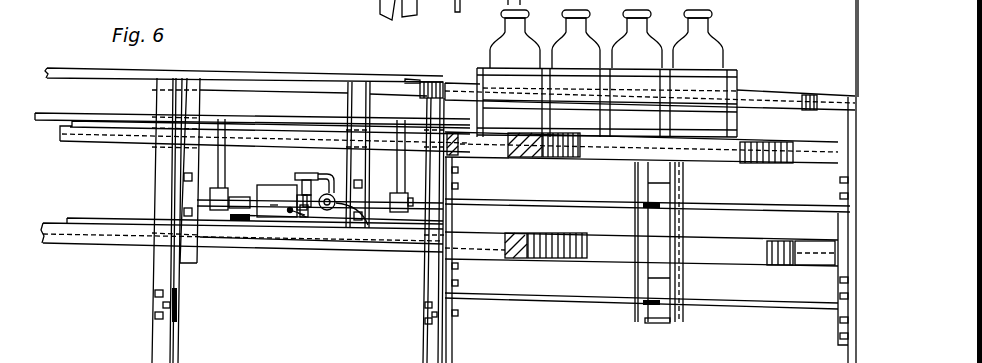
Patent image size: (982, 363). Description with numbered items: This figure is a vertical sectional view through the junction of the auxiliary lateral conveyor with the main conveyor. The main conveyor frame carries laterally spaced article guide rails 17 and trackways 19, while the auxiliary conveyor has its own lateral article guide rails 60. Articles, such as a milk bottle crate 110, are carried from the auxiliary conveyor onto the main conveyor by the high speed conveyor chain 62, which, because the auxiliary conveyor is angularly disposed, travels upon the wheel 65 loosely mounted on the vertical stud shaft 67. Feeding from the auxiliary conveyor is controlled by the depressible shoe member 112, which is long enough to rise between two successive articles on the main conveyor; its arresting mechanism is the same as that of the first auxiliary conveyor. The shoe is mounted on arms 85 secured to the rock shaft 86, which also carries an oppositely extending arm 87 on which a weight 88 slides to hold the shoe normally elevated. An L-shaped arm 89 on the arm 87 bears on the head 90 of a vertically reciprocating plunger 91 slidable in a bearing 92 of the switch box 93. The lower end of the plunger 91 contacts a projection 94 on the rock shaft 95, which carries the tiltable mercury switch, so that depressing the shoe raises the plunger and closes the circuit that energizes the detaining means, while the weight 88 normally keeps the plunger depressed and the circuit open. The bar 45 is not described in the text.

The article guide rails 17 is at (233, 84).
The shoe member 112 is at (285, 118).
The lateral article guide rails 60 is at (413, 81).
The guide bar 45 is at (143, 100).
The trackways 19 is at (117, 132).
The arms 85 is at (222, 159).
The rock shaft 86 is at (237, 195).
The L-shaped arm 89 is at (325, 181).
The head 90 is at (298, 182).
The plunger 91 is at (303, 209).
The bearing 92 is at (310, 218).
The switch box 93 is at (273, 205).
The projection 94 is at (300, 216).
The rock shaft 95 is at (290, 217).
The arm 87 is at (330, 211).
The weight 88 is at (368, 225).
The conveyor chain 62 is at (498, 153).
The wheel 65 is at (597, 155).
The milk bottle crate 110 is at (753, 62).
The vertical stud shaft 67 is at (653, 323).